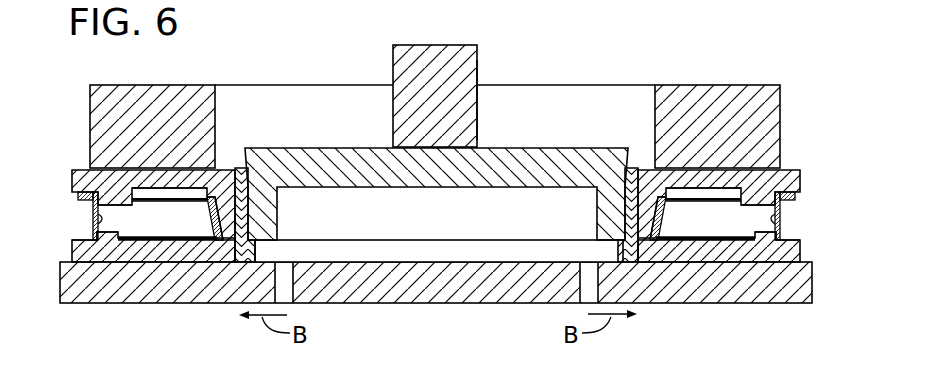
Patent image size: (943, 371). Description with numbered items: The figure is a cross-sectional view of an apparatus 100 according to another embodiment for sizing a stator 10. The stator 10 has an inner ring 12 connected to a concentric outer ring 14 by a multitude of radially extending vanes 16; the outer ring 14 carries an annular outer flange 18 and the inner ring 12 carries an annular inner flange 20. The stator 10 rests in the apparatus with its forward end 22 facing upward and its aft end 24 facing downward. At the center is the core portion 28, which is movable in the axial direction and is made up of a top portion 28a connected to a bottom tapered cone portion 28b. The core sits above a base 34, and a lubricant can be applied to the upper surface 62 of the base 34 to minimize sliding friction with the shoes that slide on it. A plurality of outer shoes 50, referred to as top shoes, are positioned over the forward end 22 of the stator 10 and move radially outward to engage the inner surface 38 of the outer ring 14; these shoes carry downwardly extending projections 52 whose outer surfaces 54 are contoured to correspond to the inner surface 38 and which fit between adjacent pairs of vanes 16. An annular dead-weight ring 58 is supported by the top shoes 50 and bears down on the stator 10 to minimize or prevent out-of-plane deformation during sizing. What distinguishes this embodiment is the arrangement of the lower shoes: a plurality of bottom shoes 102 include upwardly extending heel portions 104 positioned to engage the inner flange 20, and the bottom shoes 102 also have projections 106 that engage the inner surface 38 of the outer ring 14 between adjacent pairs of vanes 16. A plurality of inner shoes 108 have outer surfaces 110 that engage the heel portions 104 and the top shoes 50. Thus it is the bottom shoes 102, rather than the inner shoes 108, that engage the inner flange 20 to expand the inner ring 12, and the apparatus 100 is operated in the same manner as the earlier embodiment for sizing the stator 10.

The apparatus 100 is at (703, 40).
The stator 10 is at (155, 243).
The inner ring 12 is at (200, 237).
The outer ring 14 is at (100, 218).
The vanes 16 is at (157, 202).
The outer flange 18 is at (80, 194).
The inner flange 20 is at (217, 210).
The forward end 22 is at (180, 200).
The aft end 24 is at (178, 240).
The core portion 28 is at (483, 76).
The top portion 28a is at (478, 100).
The bottom tapered cone portion 28b is at (370, 147).
The base 34 is at (388, 295).
The inner surface 38 is at (100, 241).
The outer shoes 50 is at (137, 178).
The projections 52 is at (117, 187).
The outer surfaces 54 is at (87, 197).
The dead-weight ring 58 is at (103, 87).
The upper surface 62 is at (368, 261).
The bottom shoes 102 is at (110, 240).
The heel portions 104 is at (236, 205).
The projections 106 is at (100, 247).
The inner shoes 108 is at (242, 222).
The outer surfaces 110 is at (215, 240).